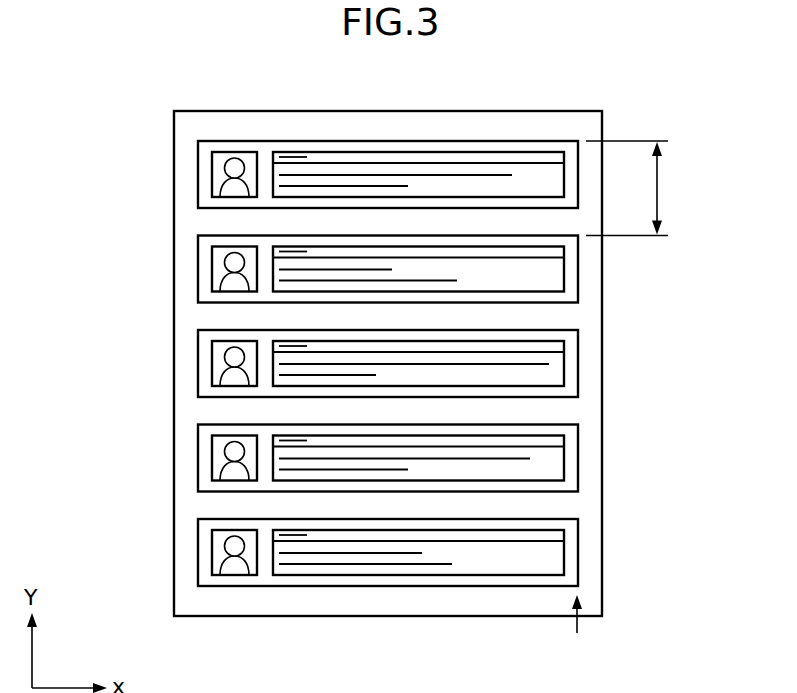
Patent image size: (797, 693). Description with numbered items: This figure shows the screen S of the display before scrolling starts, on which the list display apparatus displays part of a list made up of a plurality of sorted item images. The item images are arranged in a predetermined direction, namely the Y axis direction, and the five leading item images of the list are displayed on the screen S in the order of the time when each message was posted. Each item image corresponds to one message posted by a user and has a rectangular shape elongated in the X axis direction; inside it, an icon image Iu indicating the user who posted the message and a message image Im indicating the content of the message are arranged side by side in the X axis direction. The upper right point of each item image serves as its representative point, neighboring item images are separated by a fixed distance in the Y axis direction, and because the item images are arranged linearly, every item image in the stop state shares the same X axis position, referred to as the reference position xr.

The screen S is at (603, 487).
The icon image Iu is at (233, 151).
The message image Im is at (412, 150).
The reference position xr is at (578, 627).